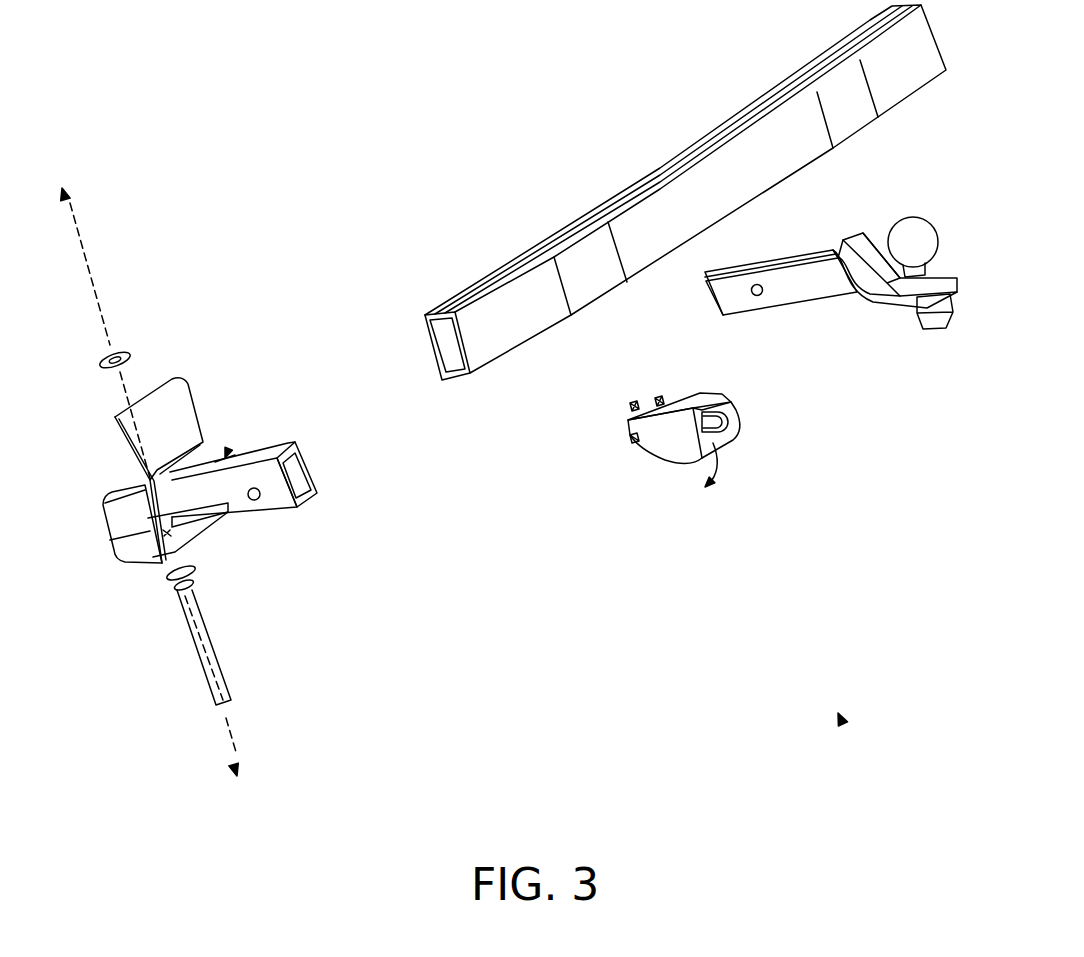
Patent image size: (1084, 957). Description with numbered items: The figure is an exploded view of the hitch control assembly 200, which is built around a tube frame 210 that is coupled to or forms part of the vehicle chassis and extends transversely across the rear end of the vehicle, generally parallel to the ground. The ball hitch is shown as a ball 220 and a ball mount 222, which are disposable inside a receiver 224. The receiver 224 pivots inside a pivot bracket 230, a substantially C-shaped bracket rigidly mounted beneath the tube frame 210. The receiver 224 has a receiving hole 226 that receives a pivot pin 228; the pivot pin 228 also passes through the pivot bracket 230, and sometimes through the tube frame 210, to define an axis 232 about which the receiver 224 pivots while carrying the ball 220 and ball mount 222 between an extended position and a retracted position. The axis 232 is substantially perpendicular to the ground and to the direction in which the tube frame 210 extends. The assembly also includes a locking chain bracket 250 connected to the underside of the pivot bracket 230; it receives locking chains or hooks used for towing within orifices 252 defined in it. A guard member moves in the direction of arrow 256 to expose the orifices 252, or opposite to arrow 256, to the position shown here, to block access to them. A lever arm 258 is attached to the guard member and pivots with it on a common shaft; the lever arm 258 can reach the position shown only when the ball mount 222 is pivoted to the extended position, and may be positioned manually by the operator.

The hitch control assembly 200 is at (843, 723).
The tube frame 210 is at (647, 219).
The ball 220 is at (908, 236).
The ball mount 222 is at (800, 286).
The receiver 224 is at (270, 510).
The receiving hole 226 is at (226, 452).
The pivot pin 228 is at (205, 628).
The pivot bracket 230 is at (153, 465).
The axis 232 is at (238, 748).
The locking chain bracket 250 is at (698, 407).
The orifices 252 is at (673, 447).
The arrow 256 is at (722, 467).
The lever arm 258 is at (650, 412).